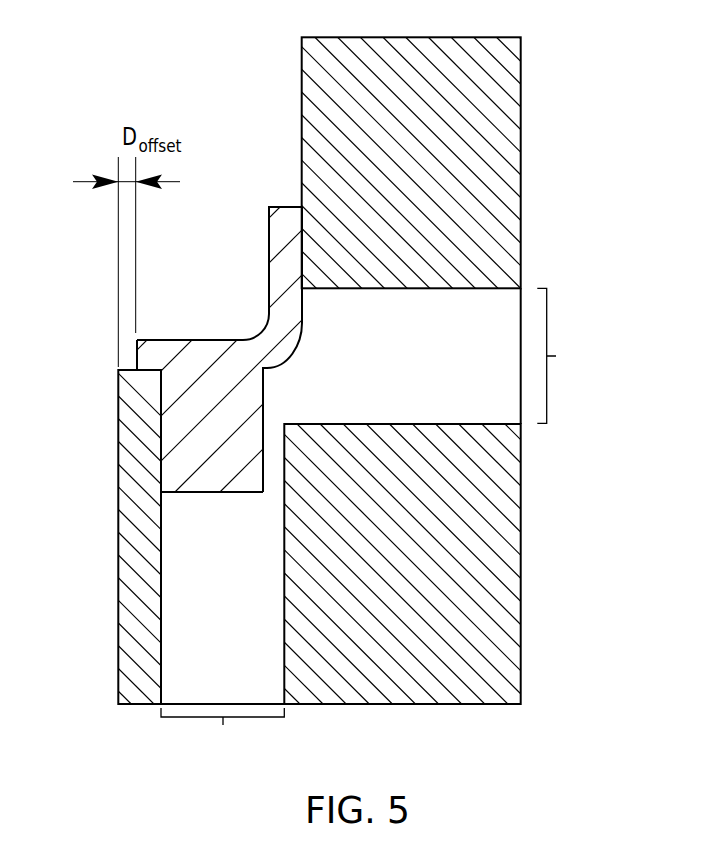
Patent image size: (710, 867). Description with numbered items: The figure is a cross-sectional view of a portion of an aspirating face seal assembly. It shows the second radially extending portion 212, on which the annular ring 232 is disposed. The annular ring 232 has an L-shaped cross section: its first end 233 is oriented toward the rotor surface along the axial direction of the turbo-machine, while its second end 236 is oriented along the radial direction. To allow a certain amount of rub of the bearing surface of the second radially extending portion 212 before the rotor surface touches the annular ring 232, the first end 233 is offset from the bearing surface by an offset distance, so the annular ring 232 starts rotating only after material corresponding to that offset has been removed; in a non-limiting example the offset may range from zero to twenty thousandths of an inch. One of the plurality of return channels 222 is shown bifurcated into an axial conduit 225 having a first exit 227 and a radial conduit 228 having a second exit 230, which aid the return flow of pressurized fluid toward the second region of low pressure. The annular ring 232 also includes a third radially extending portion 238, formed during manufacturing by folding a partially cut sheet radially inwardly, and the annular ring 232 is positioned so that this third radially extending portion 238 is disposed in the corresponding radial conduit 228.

The second radially extending portion 212 is at (516, 91).
The return channels 222 is at (250, 602).
The axial conduit 225 is at (428, 350).
The first exit 227 is at (571, 355).
The radial conduit 228 is at (243, 616).
The second exit 230 is at (222, 733).
The annular ring 232 is at (221, 339).
The first end 233 is at (138, 339).
The second end 236 is at (287, 206).
The third radially extending portion 238 is at (215, 483).